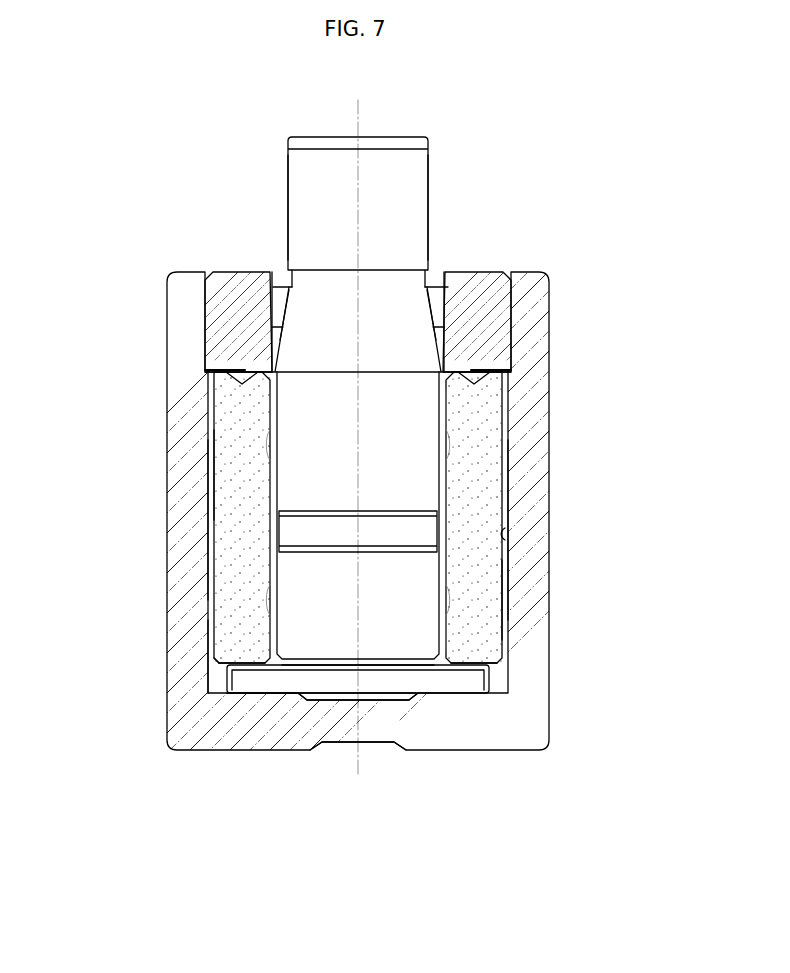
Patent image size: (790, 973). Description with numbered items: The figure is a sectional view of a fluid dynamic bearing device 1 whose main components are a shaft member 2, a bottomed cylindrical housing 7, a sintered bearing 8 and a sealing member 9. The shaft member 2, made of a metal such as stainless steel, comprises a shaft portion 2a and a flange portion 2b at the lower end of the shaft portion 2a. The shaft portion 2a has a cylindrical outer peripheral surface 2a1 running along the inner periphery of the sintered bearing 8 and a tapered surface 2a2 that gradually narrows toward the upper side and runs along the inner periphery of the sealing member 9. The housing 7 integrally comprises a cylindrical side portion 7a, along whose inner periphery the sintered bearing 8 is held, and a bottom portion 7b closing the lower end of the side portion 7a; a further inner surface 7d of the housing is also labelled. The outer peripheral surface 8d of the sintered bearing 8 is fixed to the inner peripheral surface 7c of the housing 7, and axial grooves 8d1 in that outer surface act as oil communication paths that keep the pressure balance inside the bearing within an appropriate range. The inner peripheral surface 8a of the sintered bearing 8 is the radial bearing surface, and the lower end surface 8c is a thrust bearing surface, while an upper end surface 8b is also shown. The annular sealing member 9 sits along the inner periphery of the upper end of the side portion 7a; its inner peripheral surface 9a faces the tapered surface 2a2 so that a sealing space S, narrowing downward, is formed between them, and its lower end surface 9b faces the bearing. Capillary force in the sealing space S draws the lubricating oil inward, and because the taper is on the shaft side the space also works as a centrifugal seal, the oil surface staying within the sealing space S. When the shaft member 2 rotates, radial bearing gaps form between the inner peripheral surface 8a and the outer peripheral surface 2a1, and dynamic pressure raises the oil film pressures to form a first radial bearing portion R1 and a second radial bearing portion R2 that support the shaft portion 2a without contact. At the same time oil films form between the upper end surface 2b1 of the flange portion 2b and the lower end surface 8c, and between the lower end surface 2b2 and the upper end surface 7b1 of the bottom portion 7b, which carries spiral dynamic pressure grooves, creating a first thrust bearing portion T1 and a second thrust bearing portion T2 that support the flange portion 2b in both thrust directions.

The fluid dynamic bearing device 1 is at (520, 218).
The shaft member 2 is at (430, 190).
The shaft portion 2a is at (390, 158).
The outer peripheral surface 2a1 is at (436, 400).
The tapered surface 2a2 is at (433, 300).
The flange portion 2b is at (480, 681).
The upper end surface 2b1 is at (462, 660).
The lower end surface 2b2 is at (456, 701).
The housing 7 is at (167, 311).
The side portion 7a is at (183, 517).
The bottom portion 7b is at (404, 746).
The upper end surface 7b1 is at (292, 702).
The inner peripheral surface 7c is at (505, 537).
The lower inner peripheral surface of housing 7d is at (206, 638).
The sintered bearing 8 is at (490, 447).
The inner peripheral surface 8a is at (447, 486).
The upper end face of bearing sleeve 8b is at (466, 352).
The lower end surface 8c is at (230, 676).
The outer peripheral surface 8d is at (508, 596).
The axial grooves 8d1 is at (215, 479).
The sealing member 9 is at (222, 283).
The inner peripheral surface 9a is at (296, 300).
The lower end face of seal member 9b is at (244, 386).
The sealing space S is at (278, 318).
The first radial bearing portion R1 is at (268, 447).
The second radial bearing portion R2 is at (268, 601).
The first thrust bearing portion T1 is at (247, 657).
The second thrust bearing portion T2 is at (298, 695).